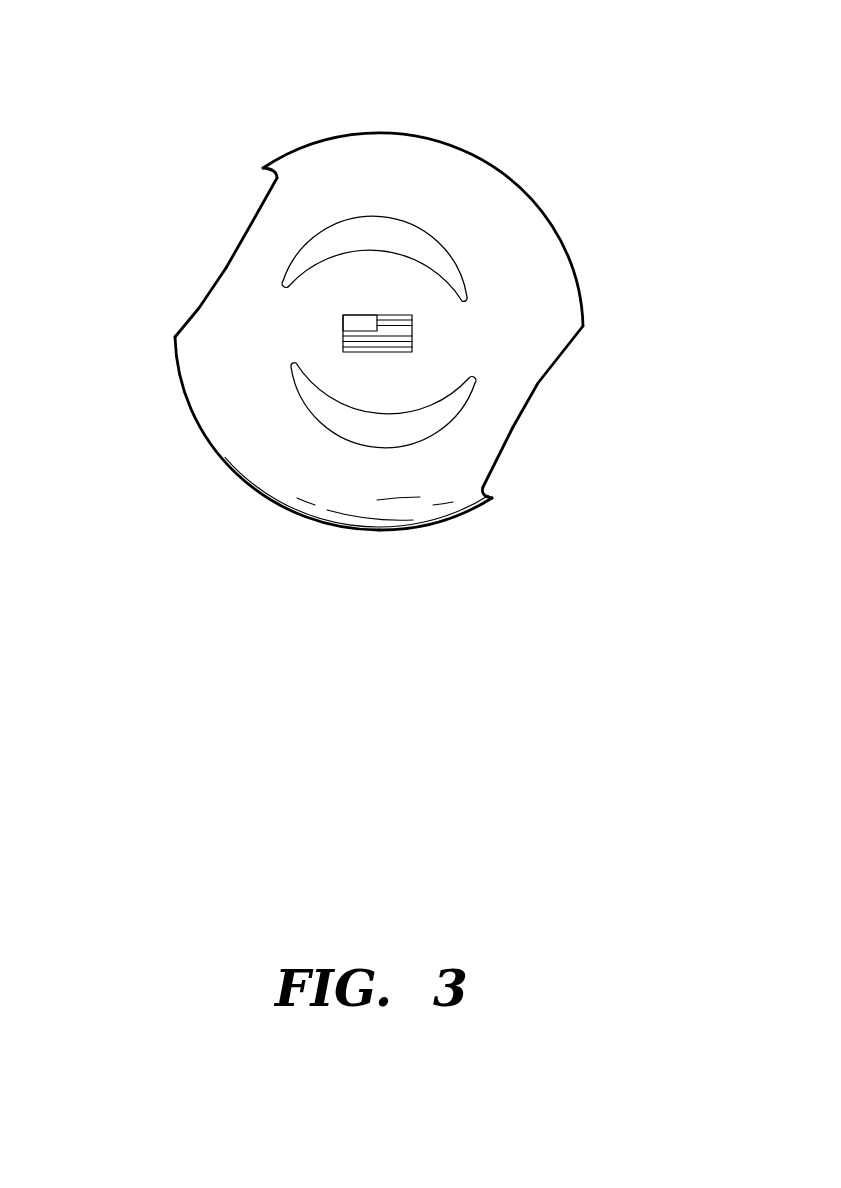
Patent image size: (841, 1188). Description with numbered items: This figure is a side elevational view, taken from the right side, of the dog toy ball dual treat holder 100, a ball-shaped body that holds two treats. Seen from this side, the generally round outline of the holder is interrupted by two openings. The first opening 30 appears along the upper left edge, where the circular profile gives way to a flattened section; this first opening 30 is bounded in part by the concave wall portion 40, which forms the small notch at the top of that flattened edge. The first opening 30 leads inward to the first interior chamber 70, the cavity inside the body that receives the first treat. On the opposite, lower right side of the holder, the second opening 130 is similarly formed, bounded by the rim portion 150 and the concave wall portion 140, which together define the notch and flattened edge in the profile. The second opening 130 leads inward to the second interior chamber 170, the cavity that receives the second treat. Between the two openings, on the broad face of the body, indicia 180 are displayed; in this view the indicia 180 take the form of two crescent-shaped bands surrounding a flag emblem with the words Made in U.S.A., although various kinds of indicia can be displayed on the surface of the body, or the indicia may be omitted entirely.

The dog toy ball dual treat holder 100 is at (217, 92).
The first opening 30 is at (254, 213).
The concave wall portion 40 is at (263, 167).
The first interior chamber 70 is at (223, 268).
The second opening 130 is at (568, 351).
The concave wall portion 140 is at (492, 494).
The rim portion 150 is at (487, 498).
The second interior chamber 170 is at (510, 432).
The indicia 180 is at (436, 243).